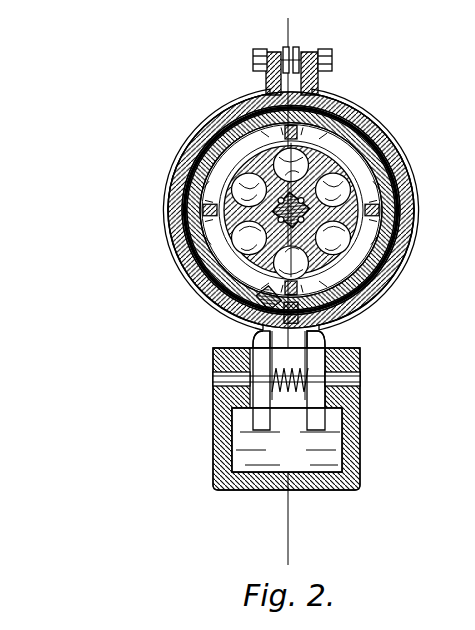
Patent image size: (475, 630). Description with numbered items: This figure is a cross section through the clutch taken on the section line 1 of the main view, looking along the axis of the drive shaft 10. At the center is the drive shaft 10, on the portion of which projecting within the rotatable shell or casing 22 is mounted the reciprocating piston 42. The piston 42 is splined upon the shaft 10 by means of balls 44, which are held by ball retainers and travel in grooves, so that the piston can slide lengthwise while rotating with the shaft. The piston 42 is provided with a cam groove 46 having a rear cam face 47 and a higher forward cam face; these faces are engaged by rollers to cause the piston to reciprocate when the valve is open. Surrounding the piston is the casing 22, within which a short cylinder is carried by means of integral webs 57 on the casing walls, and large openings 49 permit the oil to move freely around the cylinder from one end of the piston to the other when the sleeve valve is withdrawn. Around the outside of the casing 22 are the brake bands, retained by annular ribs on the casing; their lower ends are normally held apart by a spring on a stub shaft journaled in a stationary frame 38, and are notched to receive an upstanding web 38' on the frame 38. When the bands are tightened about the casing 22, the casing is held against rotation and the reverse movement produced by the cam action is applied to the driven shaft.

The section line 1 is at (278, 32).
The drive shaft 10 is at (290, 172).
The rotatable shell or casing 22 is at (292, 210).
The stationary frame 38 is at (261, 419).
The upstanding web 38' is at (322, 446).
The reciprocating piston 42 is at (246, 210).
The balls 44 is at (285, 210).
The cam groove 46 is at (331, 210).
The rear cam face 47 is at (325, 210).
The large openings 49 is at (201, 290).
The integral webs 57 is at (255, 210).